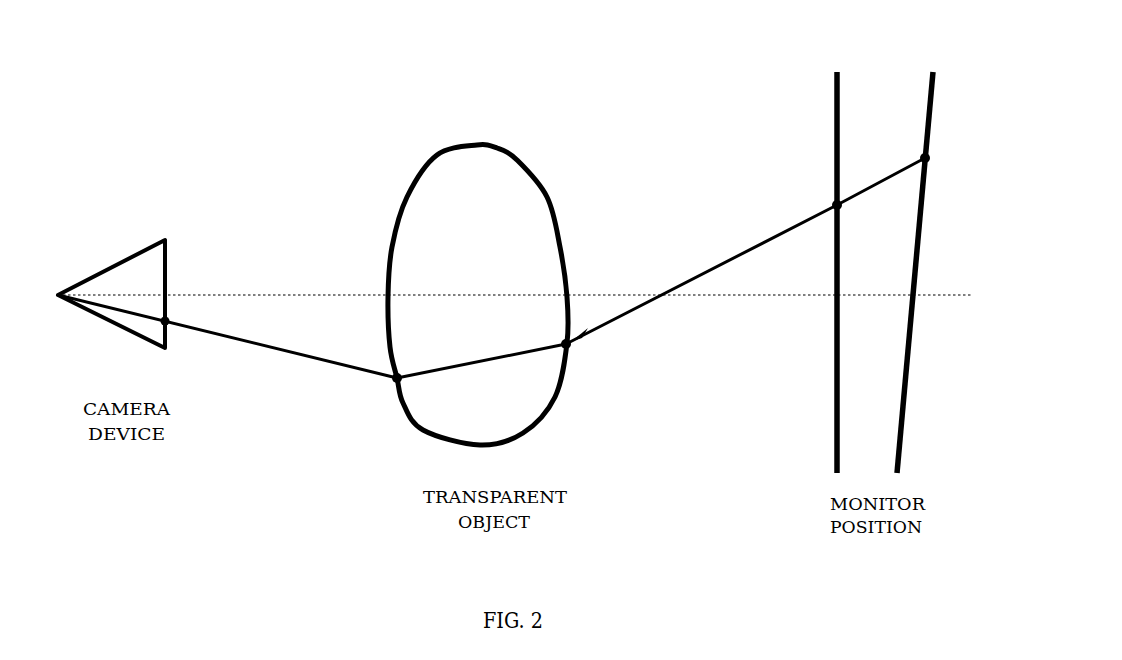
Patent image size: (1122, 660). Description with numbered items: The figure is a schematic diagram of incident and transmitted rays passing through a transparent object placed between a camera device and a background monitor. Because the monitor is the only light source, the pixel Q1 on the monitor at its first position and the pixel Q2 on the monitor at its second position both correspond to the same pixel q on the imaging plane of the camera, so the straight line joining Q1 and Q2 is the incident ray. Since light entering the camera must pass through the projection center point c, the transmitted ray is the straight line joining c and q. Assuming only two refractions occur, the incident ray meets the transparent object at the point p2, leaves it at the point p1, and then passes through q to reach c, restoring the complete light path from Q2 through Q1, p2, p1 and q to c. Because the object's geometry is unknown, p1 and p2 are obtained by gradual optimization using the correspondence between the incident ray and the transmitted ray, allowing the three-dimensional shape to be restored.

The projection center point of the camera c is at (110, 294).
The pixel on the imaging plane of the camera q is at (174, 336).
The intersection point of the light ray with the transparent object p1 is at (387, 392).
The intersection point of the light ray with the transparent object p2 is at (578, 350).
The pixel on the background monitor at the first position Q1 is at (820, 190).
The pixel on the background monitor at the second position Q2 is at (943, 158).